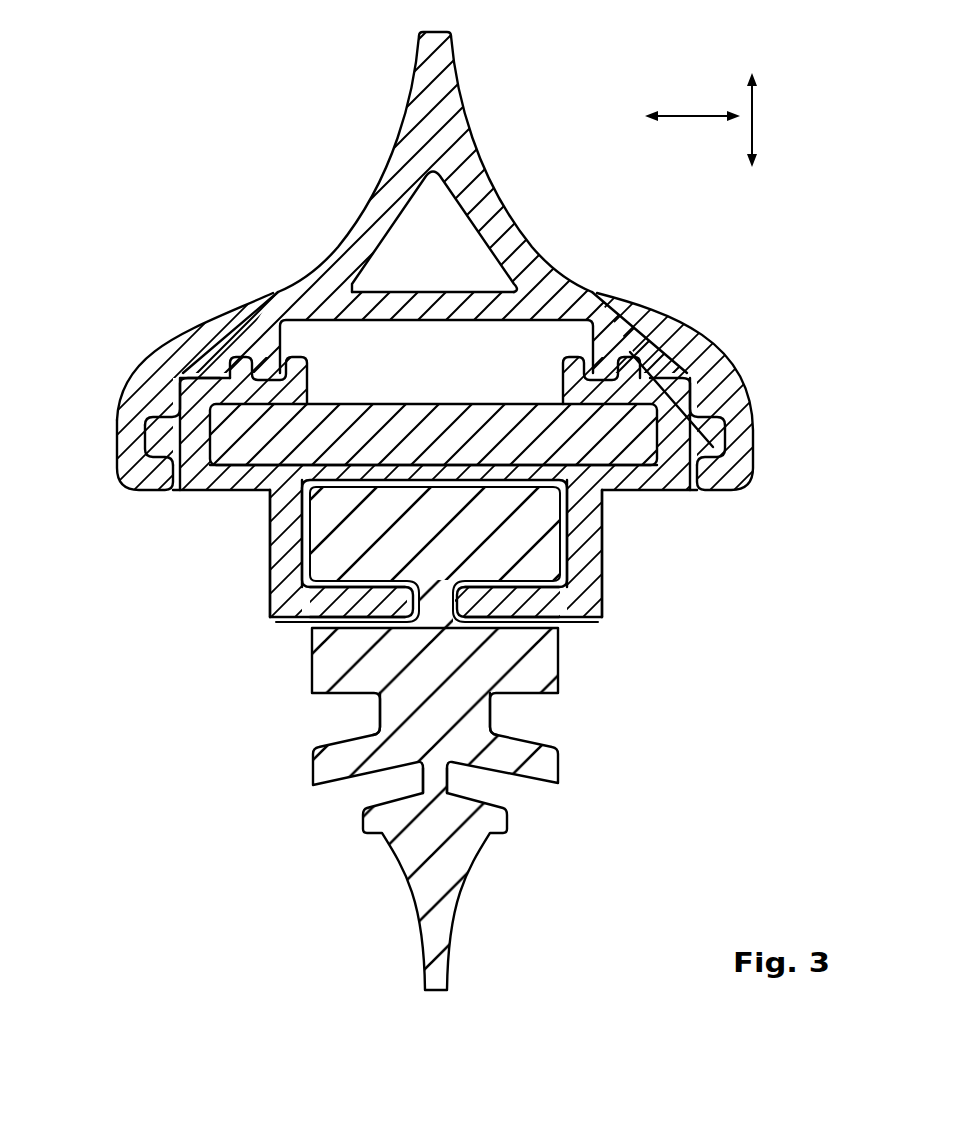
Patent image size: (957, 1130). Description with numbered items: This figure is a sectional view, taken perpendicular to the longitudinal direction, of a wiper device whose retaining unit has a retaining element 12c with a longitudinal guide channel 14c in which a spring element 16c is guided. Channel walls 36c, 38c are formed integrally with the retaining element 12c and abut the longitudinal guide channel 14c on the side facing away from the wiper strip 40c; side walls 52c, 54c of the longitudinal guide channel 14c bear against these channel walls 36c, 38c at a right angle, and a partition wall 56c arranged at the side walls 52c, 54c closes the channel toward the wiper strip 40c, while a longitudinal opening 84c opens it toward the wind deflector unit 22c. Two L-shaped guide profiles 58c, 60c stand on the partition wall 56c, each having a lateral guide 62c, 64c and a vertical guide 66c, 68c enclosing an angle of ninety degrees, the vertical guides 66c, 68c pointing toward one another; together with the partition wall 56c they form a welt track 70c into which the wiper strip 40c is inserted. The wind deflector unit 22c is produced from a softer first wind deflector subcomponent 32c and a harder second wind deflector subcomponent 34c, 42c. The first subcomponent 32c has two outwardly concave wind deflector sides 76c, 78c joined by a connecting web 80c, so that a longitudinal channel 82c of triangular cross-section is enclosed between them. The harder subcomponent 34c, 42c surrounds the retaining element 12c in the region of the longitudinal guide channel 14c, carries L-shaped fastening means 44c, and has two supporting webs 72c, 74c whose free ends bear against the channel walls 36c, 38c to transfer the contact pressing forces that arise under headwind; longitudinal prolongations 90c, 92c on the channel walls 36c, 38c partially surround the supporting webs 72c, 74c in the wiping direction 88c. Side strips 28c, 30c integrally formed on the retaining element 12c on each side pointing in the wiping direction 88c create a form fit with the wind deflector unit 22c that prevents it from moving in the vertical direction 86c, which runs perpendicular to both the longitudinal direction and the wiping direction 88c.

The retaining element 12c is at (143, 458).
The longitudinal guide channel 14c is at (673, 463).
The spring element 16c is at (368, 440).
The wind deflector unit 22c is at (266, 188).
The side strip 28c is at (140, 430).
The side strip 30c is at (645, 431).
The first wind deflector subcomponent 32c is at (417, 41).
The second wind deflector subcomponent 34c is at (220, 327).
The channel wall 36c is at (133, 395).
The channel wall 38c is at (672, 390).
The wiper strip 40c is at (330, 745).
The second wind deflector subcomponent 42c is at (700, 352).
The L-shaped fastening means 44c is at (205, 495).
The side wall 52c is at (133, 475).
The side wall 54c is at (732, 453).
The partition wall 56c is at (482, 475).
The L-shaped guide profile 58c is at (345, 605).
The L-shaped guide profile 60c is at (525, 605).
The lateral guide 62c is at (290, 578).
The lateral guide 64c is at (578, 565).
The vertical guide 66c is at (375, 705).
The vertical guide 68c is at (530, 600).
The welt track 70c is at (646, 529).
The supporting web 72c is at (262, 330).
The supporting web 74c is at (610, 330).
The wind deflector side 76c is at (399, 133).
The wind deflector side 78c is at (476, 124).
The connecting web 80c is at (458, 295).
The longitudinal channel 82c is at (457, 251).
The longitudinal opening 84c is at (456, 388).
The vertical direction 86c is at (757, 120).
The wiping direction 88c is at (692, 113).
The longitudinal prolongation 90c is at (300, 362).
The longitudinal prolongation 92c is at (567, 362).